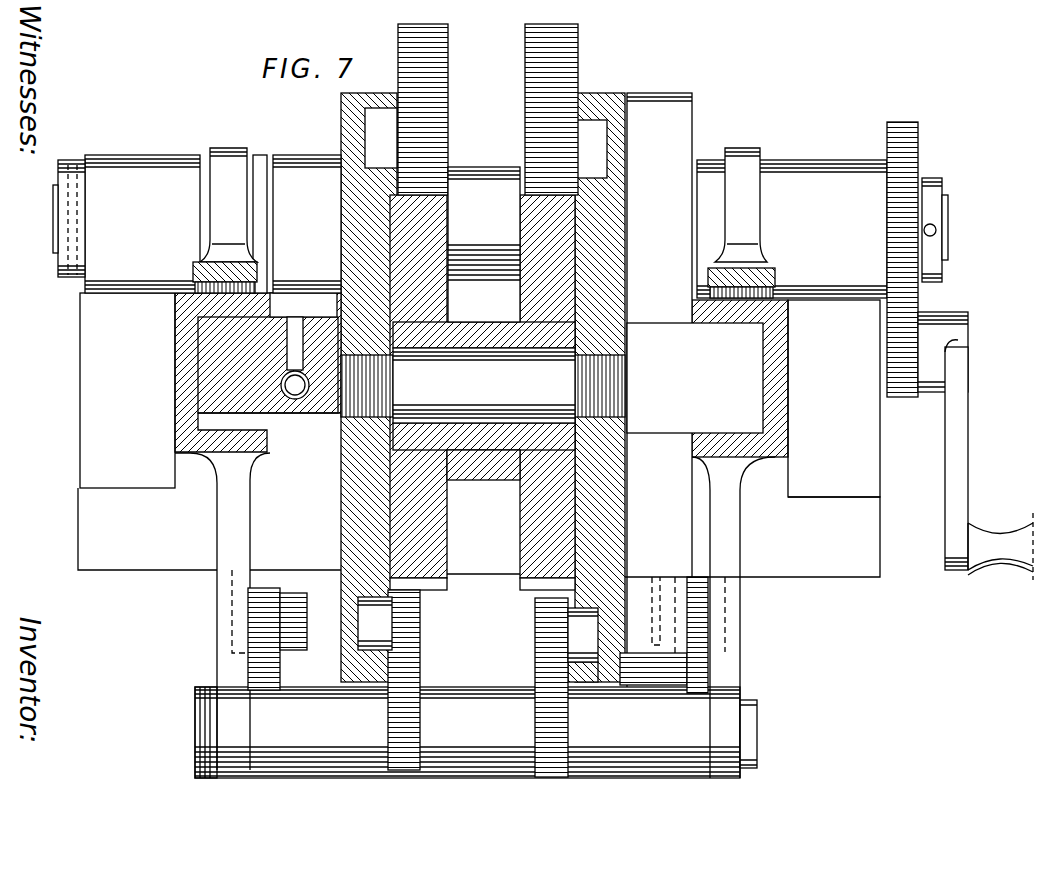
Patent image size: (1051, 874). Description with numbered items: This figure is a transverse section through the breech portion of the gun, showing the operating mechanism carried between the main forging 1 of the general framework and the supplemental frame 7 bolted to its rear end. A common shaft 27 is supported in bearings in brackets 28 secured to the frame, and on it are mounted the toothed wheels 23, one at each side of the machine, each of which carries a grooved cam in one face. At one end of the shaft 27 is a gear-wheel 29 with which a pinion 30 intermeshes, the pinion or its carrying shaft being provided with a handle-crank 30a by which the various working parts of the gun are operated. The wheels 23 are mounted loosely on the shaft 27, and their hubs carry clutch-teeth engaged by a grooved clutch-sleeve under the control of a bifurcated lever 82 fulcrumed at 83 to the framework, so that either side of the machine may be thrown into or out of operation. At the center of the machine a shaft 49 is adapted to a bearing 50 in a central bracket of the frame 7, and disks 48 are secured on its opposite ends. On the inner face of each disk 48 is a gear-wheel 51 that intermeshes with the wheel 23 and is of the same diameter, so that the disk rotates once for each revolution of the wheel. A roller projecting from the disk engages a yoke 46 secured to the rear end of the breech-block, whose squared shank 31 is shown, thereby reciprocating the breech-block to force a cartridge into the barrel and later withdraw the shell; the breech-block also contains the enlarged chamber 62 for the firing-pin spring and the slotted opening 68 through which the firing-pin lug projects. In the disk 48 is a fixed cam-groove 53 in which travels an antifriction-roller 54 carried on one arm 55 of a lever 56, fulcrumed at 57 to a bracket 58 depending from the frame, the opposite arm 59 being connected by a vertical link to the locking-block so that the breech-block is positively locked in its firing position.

The main forging 1 is at (479, 526).
The supplemental frame 7 is at (175, 363).
The toothed wheel 23 is at (432, 28).
The common shaft 27 is at (55, 215).
The brackets 28 is at (486, 226).
The gear-wheel 29 is at (918, 150).
The pinion 30 is at (920, 300).
The handle-crank 30a is at (973, 460).
The squared shank 31 is at (695, 378).
The yoke 46 is at (659, 391).
The disk 48 is at (341, 110).
The shaft 49 is at (483, 385).
The bearing 50 is at (484, 244).
The gear-wheel 51 is at (447, 217).
The fixed cam-groove 53 is at (486, 143).
The antifriction-roller 54 is at (478, 629).
The arm 55 is at (420, 655).
The lever 56 is at (467, 732).
The fulcrum 57 is at (768, 725).
The bracket 58 is at (217, 533).
The opposite arm 59 is at (280, 668).
The enlarged chamber 62 is at (295, 385).
The slotted opening 68 is at (295, 324).
The bifurcated lever 82 is at (229, 152).
The fulcrum 83 is at (193, 285).